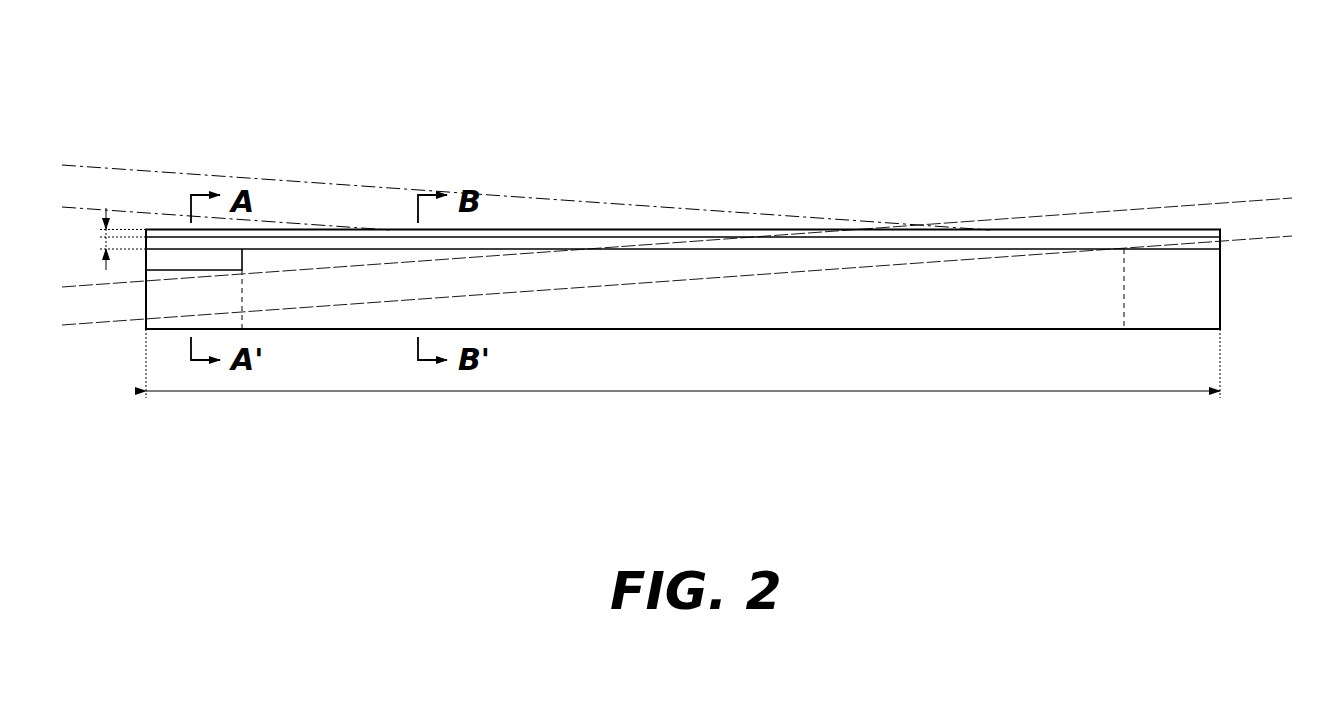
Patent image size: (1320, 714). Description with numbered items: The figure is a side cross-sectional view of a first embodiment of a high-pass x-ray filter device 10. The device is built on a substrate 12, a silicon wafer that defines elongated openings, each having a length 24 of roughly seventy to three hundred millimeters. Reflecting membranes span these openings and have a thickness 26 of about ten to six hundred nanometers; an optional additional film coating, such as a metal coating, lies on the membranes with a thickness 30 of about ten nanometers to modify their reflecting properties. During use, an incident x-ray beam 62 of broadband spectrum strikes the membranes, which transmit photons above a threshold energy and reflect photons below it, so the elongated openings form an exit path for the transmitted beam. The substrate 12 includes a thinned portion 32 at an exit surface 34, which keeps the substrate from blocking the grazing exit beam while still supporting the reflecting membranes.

The high-pass x-ray filter device 10 is at (182, 56).
The substrate 12 is at (1200, 284).
The length 24 is at (698, 392).
The thickness 26 is at (102, 242).
The thickness 30 is at (102, 233).
The thinned portion 32 is at (173, 258).
The exit surface 34 is at (146, 298).
The incident x-ray beam 62 is at (1239, 218).